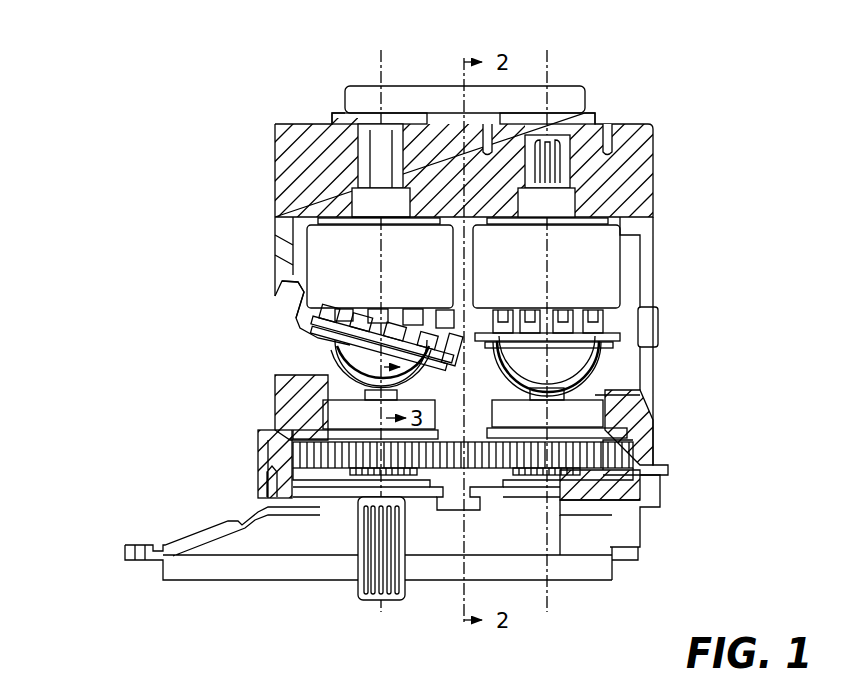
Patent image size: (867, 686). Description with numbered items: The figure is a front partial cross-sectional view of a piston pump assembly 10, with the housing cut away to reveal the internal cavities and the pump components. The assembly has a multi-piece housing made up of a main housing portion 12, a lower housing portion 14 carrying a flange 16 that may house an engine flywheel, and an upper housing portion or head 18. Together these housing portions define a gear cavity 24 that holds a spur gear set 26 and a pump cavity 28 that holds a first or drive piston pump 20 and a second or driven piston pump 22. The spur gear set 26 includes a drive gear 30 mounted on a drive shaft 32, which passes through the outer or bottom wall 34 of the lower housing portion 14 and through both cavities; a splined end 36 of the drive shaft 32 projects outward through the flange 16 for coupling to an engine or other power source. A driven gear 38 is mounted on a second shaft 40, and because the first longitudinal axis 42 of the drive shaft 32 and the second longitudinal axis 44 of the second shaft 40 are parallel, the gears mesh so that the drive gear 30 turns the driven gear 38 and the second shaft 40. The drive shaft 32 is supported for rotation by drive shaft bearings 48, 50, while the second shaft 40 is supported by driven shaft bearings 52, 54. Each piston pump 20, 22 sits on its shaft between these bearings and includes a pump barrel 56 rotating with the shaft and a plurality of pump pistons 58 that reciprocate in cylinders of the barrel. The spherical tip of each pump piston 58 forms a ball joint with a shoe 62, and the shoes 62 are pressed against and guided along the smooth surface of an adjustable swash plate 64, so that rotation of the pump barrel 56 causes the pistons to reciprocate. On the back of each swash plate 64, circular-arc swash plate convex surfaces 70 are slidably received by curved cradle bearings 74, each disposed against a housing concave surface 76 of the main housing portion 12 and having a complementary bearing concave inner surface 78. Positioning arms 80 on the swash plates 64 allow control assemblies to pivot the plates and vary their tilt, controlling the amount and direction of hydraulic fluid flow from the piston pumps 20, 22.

The piston pump assembly 10 is at (108, 95).
The main housing portion 12 is at (272, 222).
The lower housing portion 14 is at (612, 500).
The flange 16 is at (197, 577).
The upper housing portion or head 18 is at (327, 140).
The first or drive piston pump 20 is at (293, 233).
The second or driven piston pump 22 is at (625, 226).
The gear cavity 24 is at (627, 437).
The spur gear set 26 is at (488, 474).
The pump cavity 28 is at (275, 252).
The first or drive gear 30 is at (310, 456).
The first or drive shaft 32 is at (388, 150).
The outer or bottom wall 34 is at (573, 478).
The splined end 36 is at (372, 572).
The second or driven gear 38 is at (628, 462).
The second or driven shaft 40 is at (557, 167).
The first longitudinal axis 42 is at (383, 57).
The second longitudinal axis 44 is at (550, 55).
The drive shaft bearing 48 is at (290, 410).
The drive shaft bearing 50 is at (367, 203).
The driven shaft bearing 52 is at (583, 412).
The driven shaft bearing 54 is at (605, 178).
The pump barrel 56 is at (335, 242).
The pump piston 58 is at (430, 314).
The shoe 62 is at (350, 340).
The adjustable swash plate 64 is at (330, 368).
The swash plate convex surface 70 is at (330, 355).
The curved cradle bearing 74 is at (330, 398).
The housing concave surface 76 is at (378, 390).
The bearing concave inner surface 78 is at (360, 392).
The positioning arm 80 is at (283, 307).